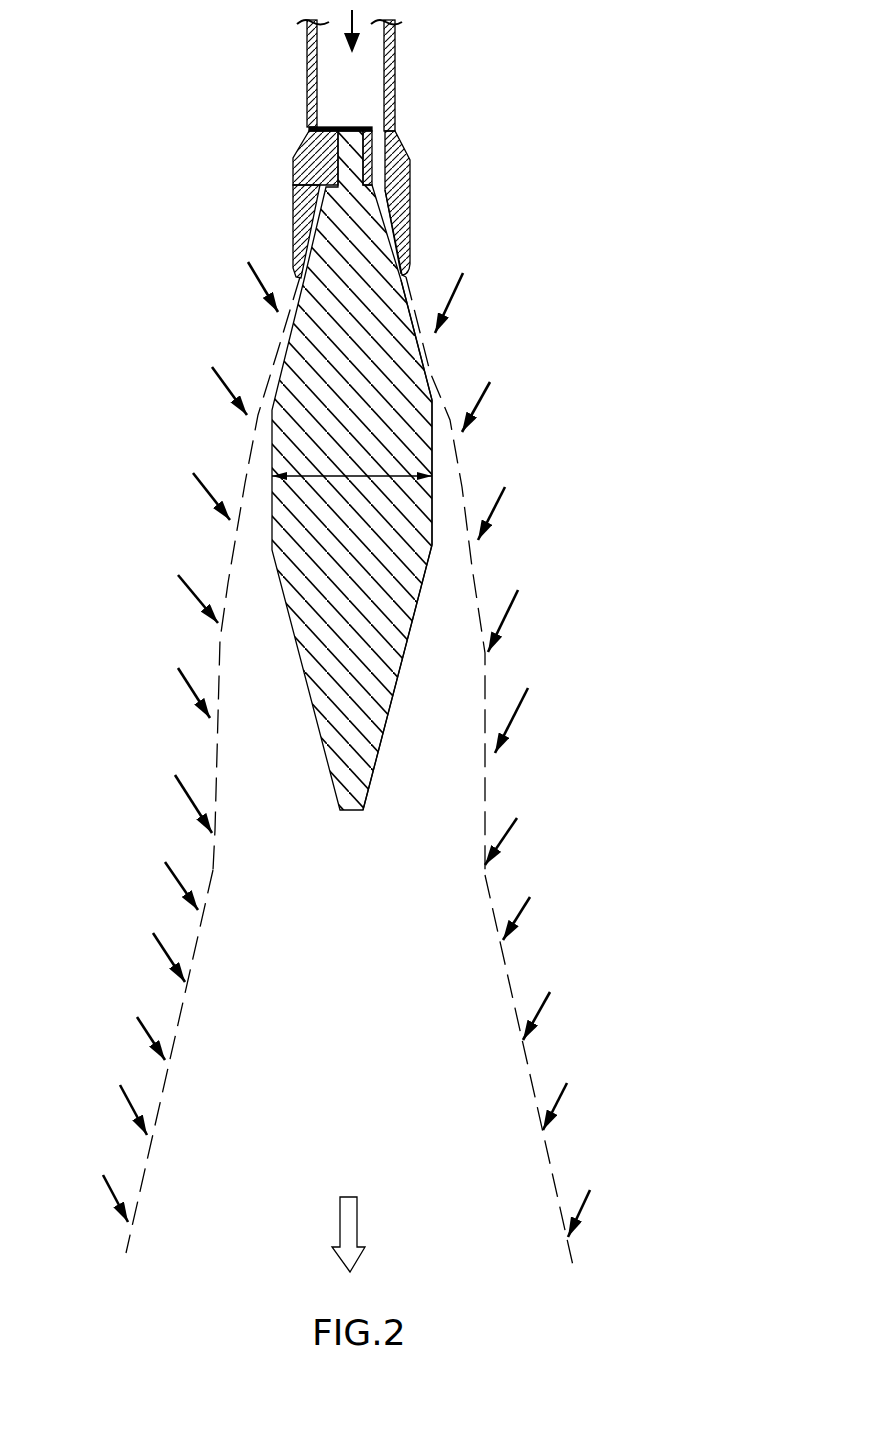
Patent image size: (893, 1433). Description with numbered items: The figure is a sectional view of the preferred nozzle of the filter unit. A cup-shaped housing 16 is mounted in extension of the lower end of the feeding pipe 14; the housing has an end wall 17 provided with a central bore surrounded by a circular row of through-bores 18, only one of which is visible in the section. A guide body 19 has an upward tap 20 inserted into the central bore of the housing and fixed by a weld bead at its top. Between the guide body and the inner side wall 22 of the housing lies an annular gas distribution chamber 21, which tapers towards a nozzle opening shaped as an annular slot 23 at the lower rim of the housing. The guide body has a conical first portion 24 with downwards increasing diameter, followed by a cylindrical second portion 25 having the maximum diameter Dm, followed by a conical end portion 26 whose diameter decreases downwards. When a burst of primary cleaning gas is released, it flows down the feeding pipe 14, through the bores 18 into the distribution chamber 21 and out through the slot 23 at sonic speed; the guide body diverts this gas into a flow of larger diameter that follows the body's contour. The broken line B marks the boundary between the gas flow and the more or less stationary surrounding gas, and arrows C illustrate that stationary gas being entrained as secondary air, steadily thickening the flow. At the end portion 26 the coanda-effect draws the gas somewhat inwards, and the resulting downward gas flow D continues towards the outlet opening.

The feeding pipe 14 is at (398, 60).
The housing 16 is at (417, 182).
The end wall 17 is at (322, 152).
The through-bores 18 is at (373, 148).
The guide body 19 is at (347, 702).
The upward tap 20 is at (358, 132).
The annular gas distribution chamber 21 is at (318, 197).
The inner side wall 22 is at (386, 218).
The annular slot 23 is at (402, 275).
The conical first portion 24 is at (423, 357).
The second portion 25 is at (433, 438).
The conical end portion 26 is at (402, 663).
The maximum diameter Dm is at (330, 475).
The boundary B is at (180, 1013).
The arrows C is at (183, 575).
The downward gas flow D is at (357, 1210).